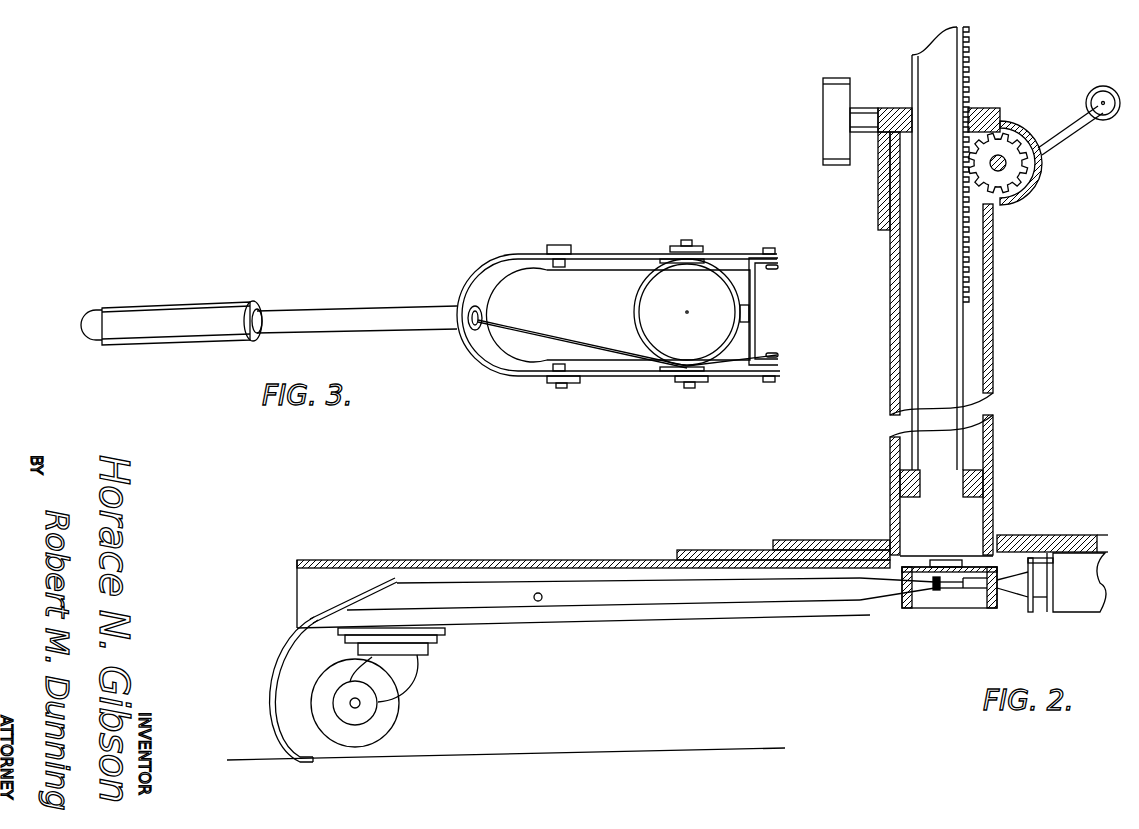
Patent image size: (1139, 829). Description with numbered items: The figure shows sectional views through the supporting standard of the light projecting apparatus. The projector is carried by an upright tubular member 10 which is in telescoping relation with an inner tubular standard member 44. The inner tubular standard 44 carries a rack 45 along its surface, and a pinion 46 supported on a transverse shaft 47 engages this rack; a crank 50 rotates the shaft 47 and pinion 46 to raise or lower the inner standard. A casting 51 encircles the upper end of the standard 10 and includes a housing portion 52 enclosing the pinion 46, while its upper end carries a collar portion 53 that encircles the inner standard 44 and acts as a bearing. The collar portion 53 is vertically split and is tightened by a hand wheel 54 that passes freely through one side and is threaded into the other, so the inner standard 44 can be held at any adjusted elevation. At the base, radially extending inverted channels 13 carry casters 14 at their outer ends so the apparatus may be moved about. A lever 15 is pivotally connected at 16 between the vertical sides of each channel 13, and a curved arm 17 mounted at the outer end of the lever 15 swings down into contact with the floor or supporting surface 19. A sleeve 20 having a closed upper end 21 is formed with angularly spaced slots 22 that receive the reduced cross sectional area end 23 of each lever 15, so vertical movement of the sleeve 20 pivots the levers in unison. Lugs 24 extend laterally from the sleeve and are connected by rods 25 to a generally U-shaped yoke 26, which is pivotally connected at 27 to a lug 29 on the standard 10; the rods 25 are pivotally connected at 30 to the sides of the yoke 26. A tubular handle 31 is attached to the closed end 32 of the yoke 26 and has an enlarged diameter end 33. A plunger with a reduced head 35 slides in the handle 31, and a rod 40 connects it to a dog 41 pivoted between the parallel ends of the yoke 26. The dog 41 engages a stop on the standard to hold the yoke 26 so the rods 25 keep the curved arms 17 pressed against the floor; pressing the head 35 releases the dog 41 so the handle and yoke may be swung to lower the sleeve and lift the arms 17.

In FIG. 2, the upright tubular member 10 is at (995, 440).
In FIG. 2, the inverted channel 13 is at (597, 560).
In FIG. 2, the caster 14 is at (398, 693).
In FIG. 2, the lever 15 is at (587, 612).
In FIG. 2, the pivot 16 is at (538, 601).
In FIG. 2, the curved arm 17 is at (277, 712).
In FIG. 2, the floor or supporting surface 19 is at (548, 752).
In FIG. 2, the sleeve 20 is at (948, 608).
In FIG. 2, the closed upper end 21 is at (993, 550).
In FIG. 2, the slot 22 is at (903, 605).
In FIG. 2, the reduced cross sectional area end 23 is at (933, 590).
In FIG. 2, the lug 24 is at (940, 553).
In FIG. 2, the inner tubular standard member 44 is at (965, 333).
In FIG. 2, the rack 45 is at (972, 275).
In FIG. 2, the pinion 46 is at (1025, 207).
In FIG. 2, the transverse shaft 47 is at (1008, 170).
In FIG. 2, the crank 50 is at (1077, 120).
In FIG. 2, the casting 51 is at (1044, 163).
In FIG. 2, the housing portion 52 is at (1003, 130).
In FIG. 2, the collar portion 53 is at (897, 108).
In FIG. 2, the hand wheel 54 is at (823, 118).
In FIG. 3, the rod 25 is at (708, 252).
In FIG. 3, the U-shaped yoke 26 is at (635, 378).
In FIG. 3, the pivot connection 27 is at (565, 388).
In FIG. 3, the lug 29 is at (608, 280).
In FIG. 3, the pivot connection 30 is at (690, 246).
In FIG. 3, the handle 31 is at (378, 302).
In FIG. 3, the closed end 32 is at (462, 342).
In FIG. 3, the enlarged diameter end 33 is at (190, 341).
In FIG. 3, the reduced head 35 is at (90, 325).
In FIG. 3, the rod 40 is at (530, 332).
In FIG. 3, the dog 41 is at (760, 318).